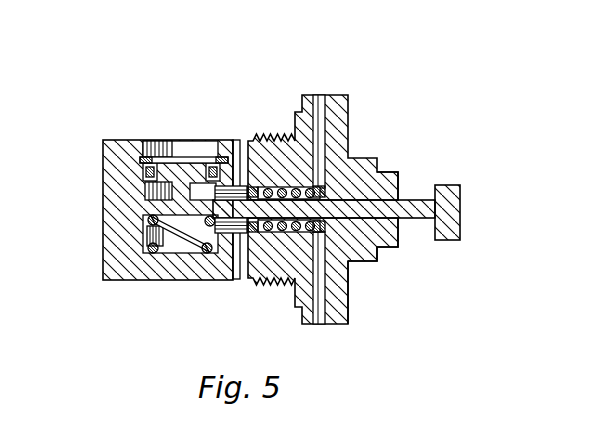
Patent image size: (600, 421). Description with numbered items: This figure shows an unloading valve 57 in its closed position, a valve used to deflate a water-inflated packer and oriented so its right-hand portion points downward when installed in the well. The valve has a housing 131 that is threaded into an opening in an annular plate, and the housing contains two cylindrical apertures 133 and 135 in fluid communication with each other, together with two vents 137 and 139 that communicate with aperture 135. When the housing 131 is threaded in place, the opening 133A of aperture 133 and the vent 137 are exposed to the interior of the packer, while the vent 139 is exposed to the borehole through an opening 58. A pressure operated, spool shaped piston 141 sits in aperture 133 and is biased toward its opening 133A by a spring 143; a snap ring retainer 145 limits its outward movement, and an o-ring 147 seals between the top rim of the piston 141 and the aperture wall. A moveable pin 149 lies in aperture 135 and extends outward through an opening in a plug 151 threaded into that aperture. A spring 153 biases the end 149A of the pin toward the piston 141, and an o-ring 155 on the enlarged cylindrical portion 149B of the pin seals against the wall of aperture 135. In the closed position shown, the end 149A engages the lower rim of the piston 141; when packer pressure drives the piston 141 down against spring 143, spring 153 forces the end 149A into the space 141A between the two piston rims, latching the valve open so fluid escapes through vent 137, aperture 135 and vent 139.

The unloading valve 57 is at (215, 55).
The opening 58 is at (11, 16).
The housing 131 is at (135, 281).
The cylindrical aperture 133 is at (130, 281).
The opening of aperture 133 133A is at (197, 152).
The cylindrical aperture 135 is at (297, 233).
The vent 137 is at (241, 140).
The vent 139 is at (323, 153).
The spool shaped piston 141 is at (143, 232).
The space between the two rims of the piston 141A is at (145, 193).
The spring 143 is at (168, 246).
The snap ring retainer 145 is at (140, 160).
The o-ring 147 is at (146, 171).
The moveable pin 149 is at (405, 248).
The end of the pin 149A is at (232, 236).
The enlarged cylindrical portion of the pin 149B is at (282, 184).
The plug 151 is at (383, 262).
The spring 153 is at (357, 244).
The o-ring 155 is at (282, 220).